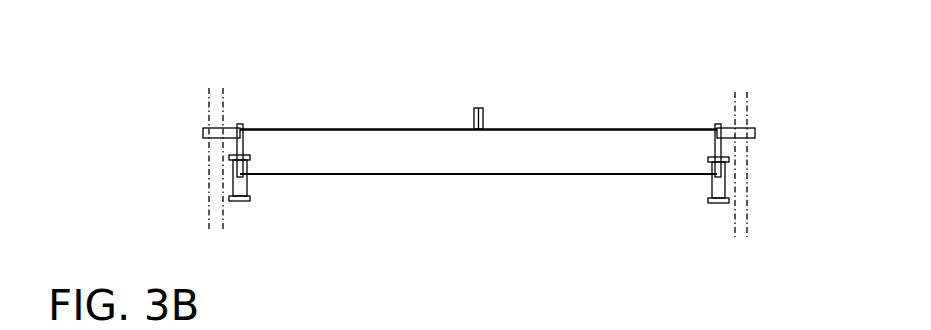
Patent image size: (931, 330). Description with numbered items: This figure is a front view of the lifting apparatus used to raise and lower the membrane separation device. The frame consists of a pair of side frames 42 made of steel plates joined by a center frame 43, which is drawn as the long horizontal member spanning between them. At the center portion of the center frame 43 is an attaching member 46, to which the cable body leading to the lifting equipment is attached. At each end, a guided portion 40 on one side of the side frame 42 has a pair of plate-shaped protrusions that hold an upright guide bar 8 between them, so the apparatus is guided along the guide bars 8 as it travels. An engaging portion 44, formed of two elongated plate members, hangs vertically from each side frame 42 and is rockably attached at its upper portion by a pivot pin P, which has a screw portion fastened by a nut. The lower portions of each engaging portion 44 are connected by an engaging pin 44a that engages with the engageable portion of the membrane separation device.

The guide bar 8 is at (207, 107).
The guided portion 40 is at (757, 133).
The side frame 42 is at (240, 125).
The center frame 43 is at (567, 128).
The engaging portion 44 is at (247, 177).
The engaging pin 44a is at (242, 203).
The attaching member 46 is at (480, 108).
The pivot pin P is at (232, 157).